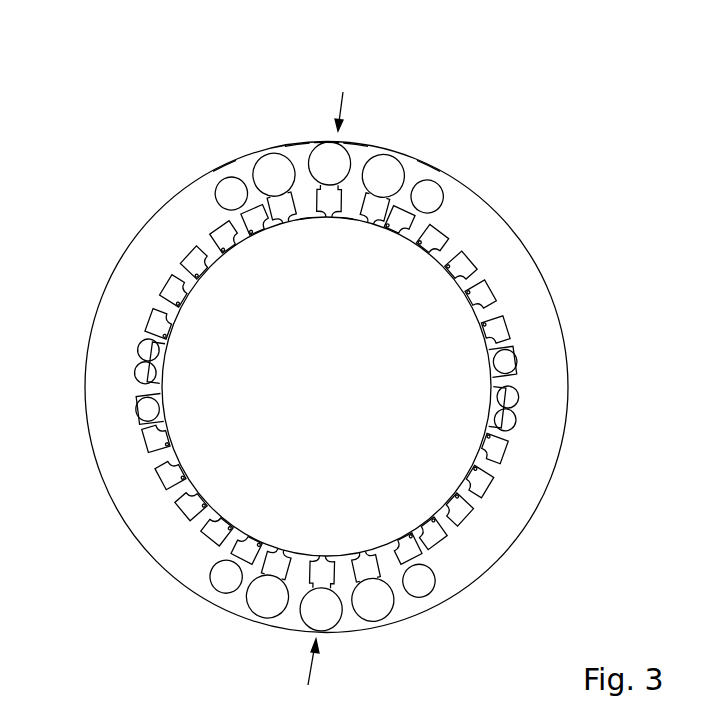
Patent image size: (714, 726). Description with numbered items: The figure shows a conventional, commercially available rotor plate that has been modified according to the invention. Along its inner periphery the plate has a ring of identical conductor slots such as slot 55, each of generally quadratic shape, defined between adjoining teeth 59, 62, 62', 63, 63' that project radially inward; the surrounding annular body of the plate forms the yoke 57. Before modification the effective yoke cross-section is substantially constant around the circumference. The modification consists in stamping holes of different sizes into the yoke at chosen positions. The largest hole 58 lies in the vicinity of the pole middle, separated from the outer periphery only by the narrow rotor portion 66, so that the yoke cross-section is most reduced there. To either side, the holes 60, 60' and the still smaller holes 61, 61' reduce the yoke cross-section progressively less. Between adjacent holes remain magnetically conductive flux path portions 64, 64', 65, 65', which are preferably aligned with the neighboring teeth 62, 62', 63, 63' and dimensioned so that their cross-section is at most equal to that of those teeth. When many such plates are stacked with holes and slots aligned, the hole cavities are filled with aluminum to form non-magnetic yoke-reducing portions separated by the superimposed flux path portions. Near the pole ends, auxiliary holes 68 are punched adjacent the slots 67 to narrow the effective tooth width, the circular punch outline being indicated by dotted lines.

The slot 55 is at (162, 293).
The stator yoke 57 is at (507, 279).
The largest hole 58 is at (344, 150).
The tooth 59 is at (329, 217).
The hole 60 is at (246, 160).
The hole 60' is at (421, 169).
The hole 61 is at (180, 184).
The hole 61' is at (488, 196).
The tooth 62 is at (289, 254).
The tooth 62' is at (365, 257).
The tooth 63 is at (173, 212).
The tooth 63' is at (490, 222).
The flux path portion 64 is at (272, 121).
The flux path portion 64' is at (394, 126).
The flux path portion 65 is at (189, 150).
The flux path portion 65' is at (473, 161).
The rotor portion 66 is at (322, 138).
The slot with holes 67 is at (158, 405).
The auxiliary hole 68 is at (137, 408).